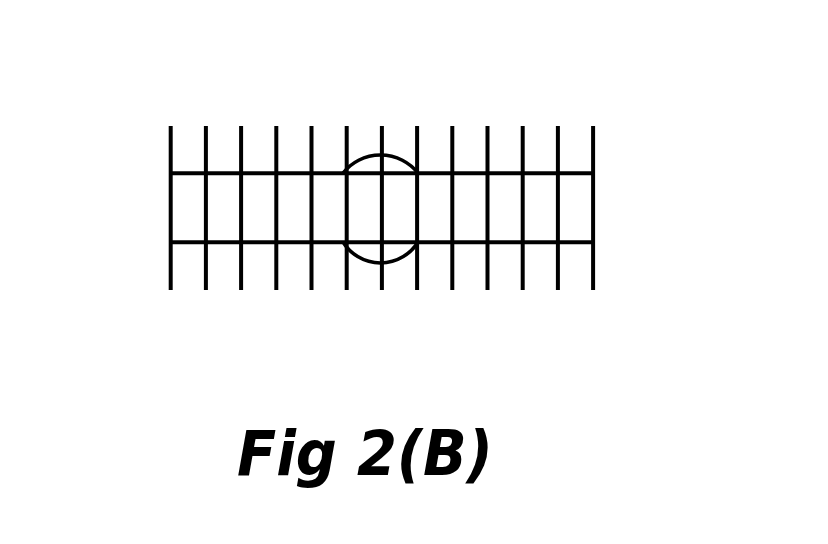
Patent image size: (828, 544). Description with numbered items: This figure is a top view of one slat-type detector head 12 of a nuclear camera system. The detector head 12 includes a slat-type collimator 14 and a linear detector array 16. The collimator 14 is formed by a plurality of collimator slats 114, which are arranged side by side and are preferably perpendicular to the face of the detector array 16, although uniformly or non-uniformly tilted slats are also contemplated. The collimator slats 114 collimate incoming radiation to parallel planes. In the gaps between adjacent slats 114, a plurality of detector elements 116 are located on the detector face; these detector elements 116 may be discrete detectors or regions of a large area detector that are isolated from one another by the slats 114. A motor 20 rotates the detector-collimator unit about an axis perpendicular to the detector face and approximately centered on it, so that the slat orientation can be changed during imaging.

The slat-type detector head 12 is at (258, 253).
The slat-type collimator 14 is at (152, 267).
The detector array 16 is at (160, 210).
The motor 20 is at (398, 154).
The collimator slat 114 is at (595, 140).
The detector element 116 is at (502, 232).